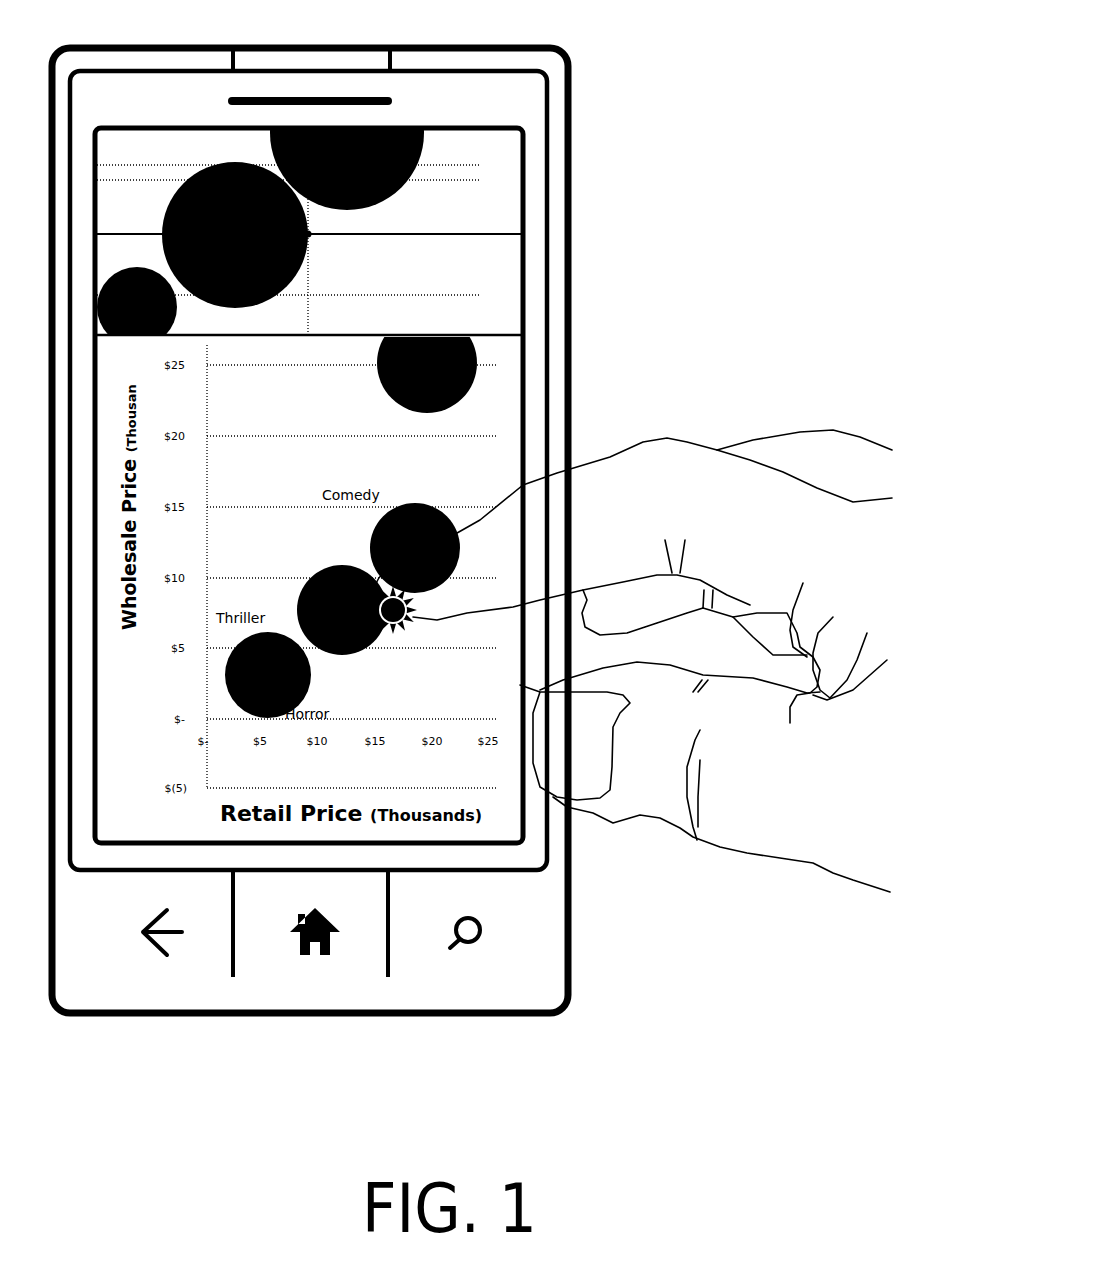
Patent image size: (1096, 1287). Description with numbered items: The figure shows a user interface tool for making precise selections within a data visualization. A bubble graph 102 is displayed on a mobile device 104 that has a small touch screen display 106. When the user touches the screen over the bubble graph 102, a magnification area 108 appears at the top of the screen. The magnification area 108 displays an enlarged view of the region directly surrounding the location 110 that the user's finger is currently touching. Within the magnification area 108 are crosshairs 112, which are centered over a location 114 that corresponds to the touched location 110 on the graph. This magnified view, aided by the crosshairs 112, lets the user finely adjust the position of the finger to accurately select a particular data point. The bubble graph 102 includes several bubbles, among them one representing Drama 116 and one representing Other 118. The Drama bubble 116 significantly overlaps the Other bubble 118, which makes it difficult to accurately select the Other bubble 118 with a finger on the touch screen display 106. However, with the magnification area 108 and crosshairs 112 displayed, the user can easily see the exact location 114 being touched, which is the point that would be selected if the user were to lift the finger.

The bubble graph 102 is at (500, 412).
The mobile device 104 is at (495, 46).
The touch screen display 106 is at (525, 453).
The magnification area 108 is at (500, 178).
The location 110 is at (400, 627).
The crosshairs 112 is at (180, 233).
The location 114 is at (310, 230).
The Drama bubble 116 is at (307, 600).
The Other bubble 118 is at (360, 563).